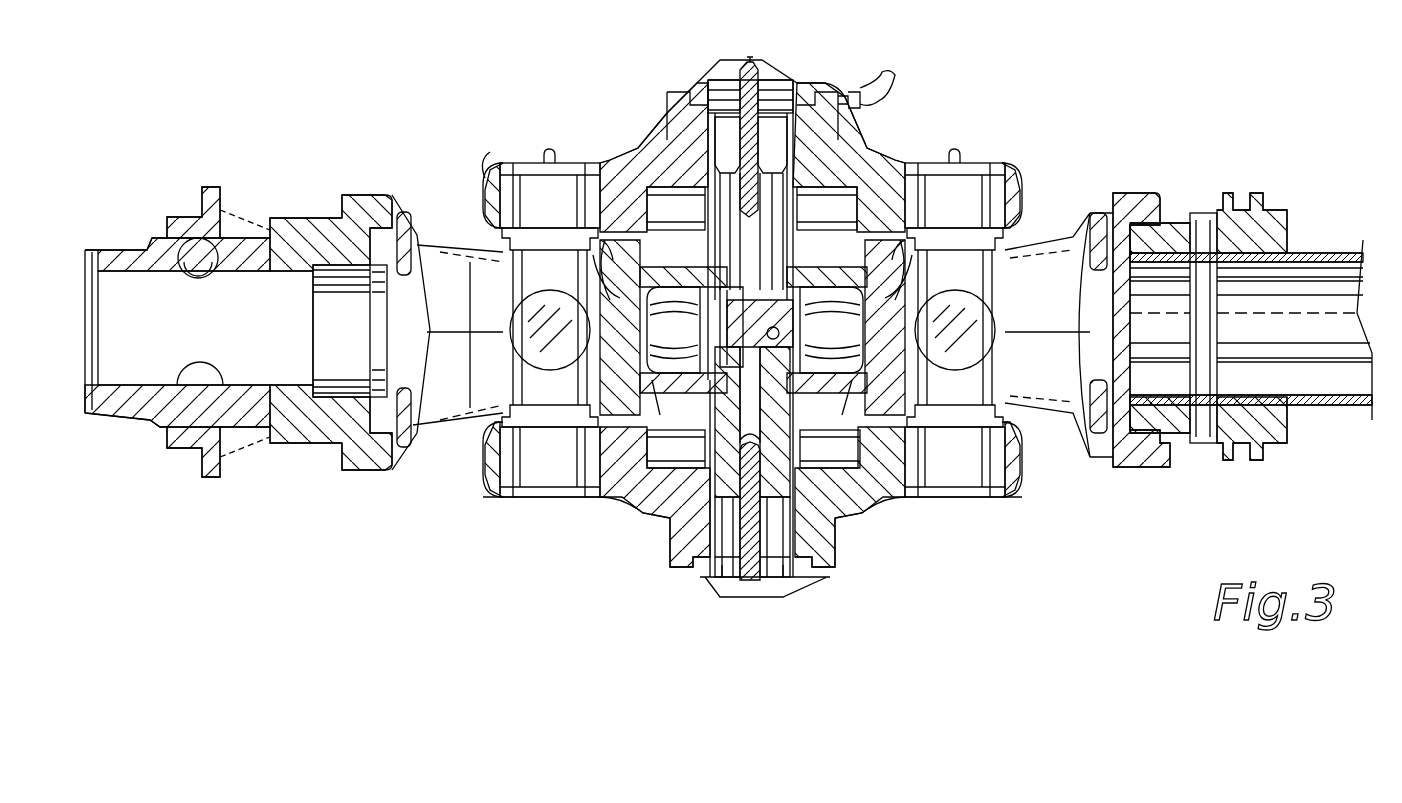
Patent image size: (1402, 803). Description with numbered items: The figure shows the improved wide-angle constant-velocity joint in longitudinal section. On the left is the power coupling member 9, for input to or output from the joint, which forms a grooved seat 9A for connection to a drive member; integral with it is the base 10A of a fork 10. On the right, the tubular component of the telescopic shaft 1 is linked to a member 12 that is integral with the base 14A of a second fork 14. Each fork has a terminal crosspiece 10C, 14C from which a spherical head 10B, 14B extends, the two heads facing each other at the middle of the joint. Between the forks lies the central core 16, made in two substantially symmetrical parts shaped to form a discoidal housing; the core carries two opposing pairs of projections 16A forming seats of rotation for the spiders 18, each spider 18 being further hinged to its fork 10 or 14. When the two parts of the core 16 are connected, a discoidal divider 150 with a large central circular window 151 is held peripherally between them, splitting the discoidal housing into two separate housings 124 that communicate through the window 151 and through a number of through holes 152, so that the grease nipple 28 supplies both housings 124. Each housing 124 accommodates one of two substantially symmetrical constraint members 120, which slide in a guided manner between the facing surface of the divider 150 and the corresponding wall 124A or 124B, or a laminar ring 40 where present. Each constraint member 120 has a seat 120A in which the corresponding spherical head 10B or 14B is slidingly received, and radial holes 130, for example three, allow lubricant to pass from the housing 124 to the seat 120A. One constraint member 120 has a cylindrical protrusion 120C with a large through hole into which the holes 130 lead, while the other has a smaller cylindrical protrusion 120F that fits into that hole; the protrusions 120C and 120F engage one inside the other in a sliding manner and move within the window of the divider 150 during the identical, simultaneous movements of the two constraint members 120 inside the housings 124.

The tubular component of a telescopic shaft 1 is at (1330, 277).
The power coupling member 9 is at (135, 450).
The grooved seat 9A is at (113, 290).
The fork 10 is at (465, 450).
The base of fork 10A is at (350, 470).
The spherical head 10B is at (673, 330).
The terminal crosspiece 10C is at (650, 283).
The member 12 is at (1201, 452).
The fork 14 is at (1073, 220).
The base of fork 14A is at (1148, 455).
The spherical head 14B is at (831, 330).
The terminal crosspiece 14C is at (858, 283).
The central core 16 is at (617, 130).
The projections 16A is at (488, 195).
The spider 18 is at (520, 317).
The grease nipple 28 is at (885, 105).
The laminar ring 40 is at (705, 125).
The constraint member 120 is at (707, 231).
The seat 120A is at (670, 414).
The cylindrical protrusion 120C is at (642, 447).
The smaller cylindrical protrusion 120F is at (864, 447).
The housings 124 is at (728, 92).
The wall of housing 124A is at (800, 575).
The wall of housing 124B is at (705, 575).
The radial holes 130 is at (722, 185).
The discoidal divider 150 is at (765, 597).
The central circular window 151 is at (795, 487).
The through holes 152 is at (757, 75).